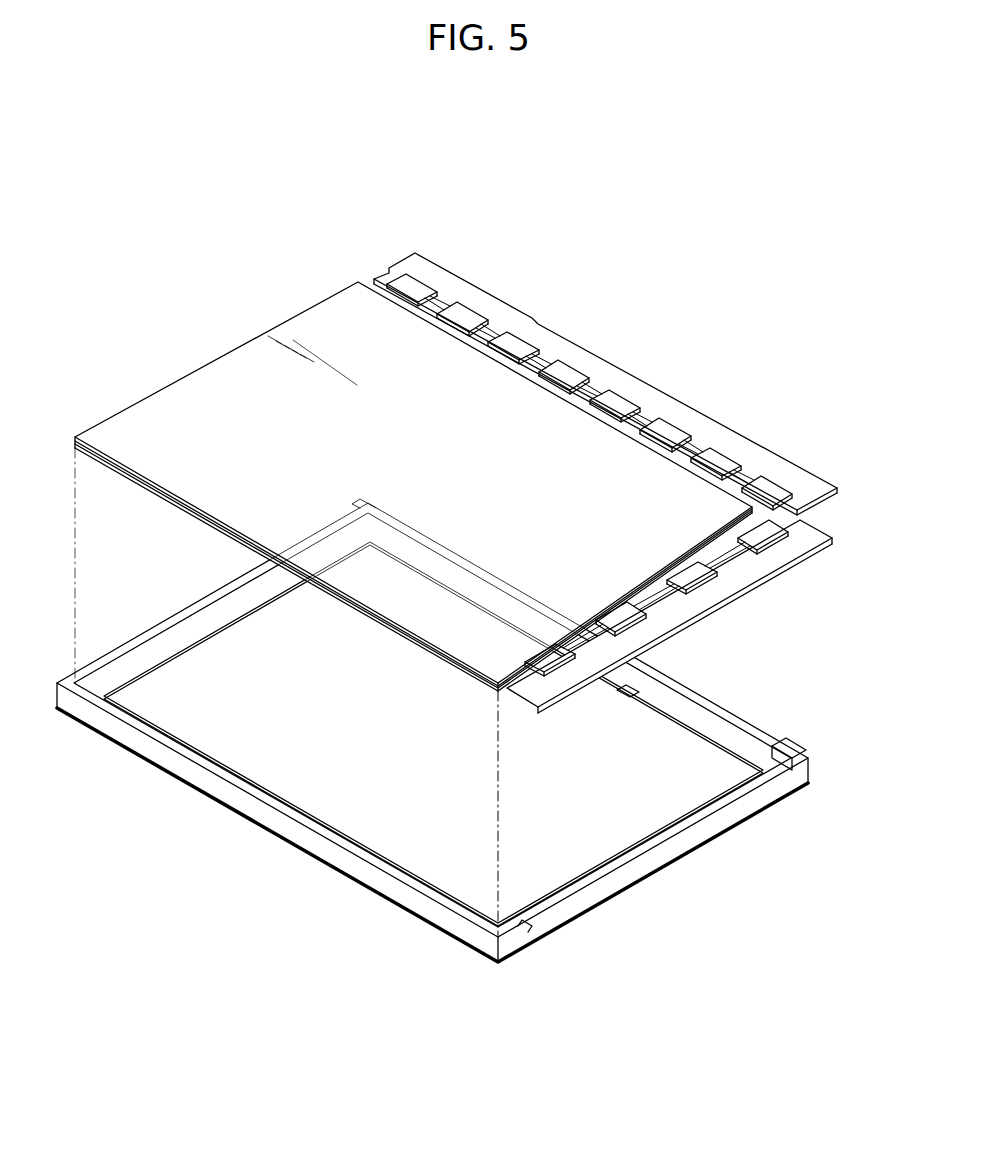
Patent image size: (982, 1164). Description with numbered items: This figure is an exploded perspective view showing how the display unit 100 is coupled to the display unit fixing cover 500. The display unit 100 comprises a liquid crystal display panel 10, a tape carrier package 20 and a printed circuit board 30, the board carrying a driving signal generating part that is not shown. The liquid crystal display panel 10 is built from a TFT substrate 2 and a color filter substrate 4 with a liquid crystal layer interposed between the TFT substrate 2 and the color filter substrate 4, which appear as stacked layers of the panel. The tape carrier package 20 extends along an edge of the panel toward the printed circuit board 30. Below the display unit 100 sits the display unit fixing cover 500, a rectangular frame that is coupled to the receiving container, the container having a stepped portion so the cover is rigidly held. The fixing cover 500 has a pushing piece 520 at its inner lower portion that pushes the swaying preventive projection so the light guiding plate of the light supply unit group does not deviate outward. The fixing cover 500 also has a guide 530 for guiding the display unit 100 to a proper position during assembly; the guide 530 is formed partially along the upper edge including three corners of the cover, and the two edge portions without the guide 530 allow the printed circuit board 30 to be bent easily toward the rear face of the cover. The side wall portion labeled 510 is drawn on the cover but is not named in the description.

The TFT substrate 2 is at (122, 476).
The color filter substrate 4 is at (128, 410).
The liquid crystal display panel 10 is at (413, 486).
The tape carrier package 20 is at (757, 535).
The printed circuit board 30 is at (805, 548).
The display unit 100 is at (481, 483).
The display unit fixing cover 500 is at (432, 705).
The sidewall 510 is at (718, 812).
The pushing piece 520 is at (628, 698).
The guide 530 is at (197, 596).